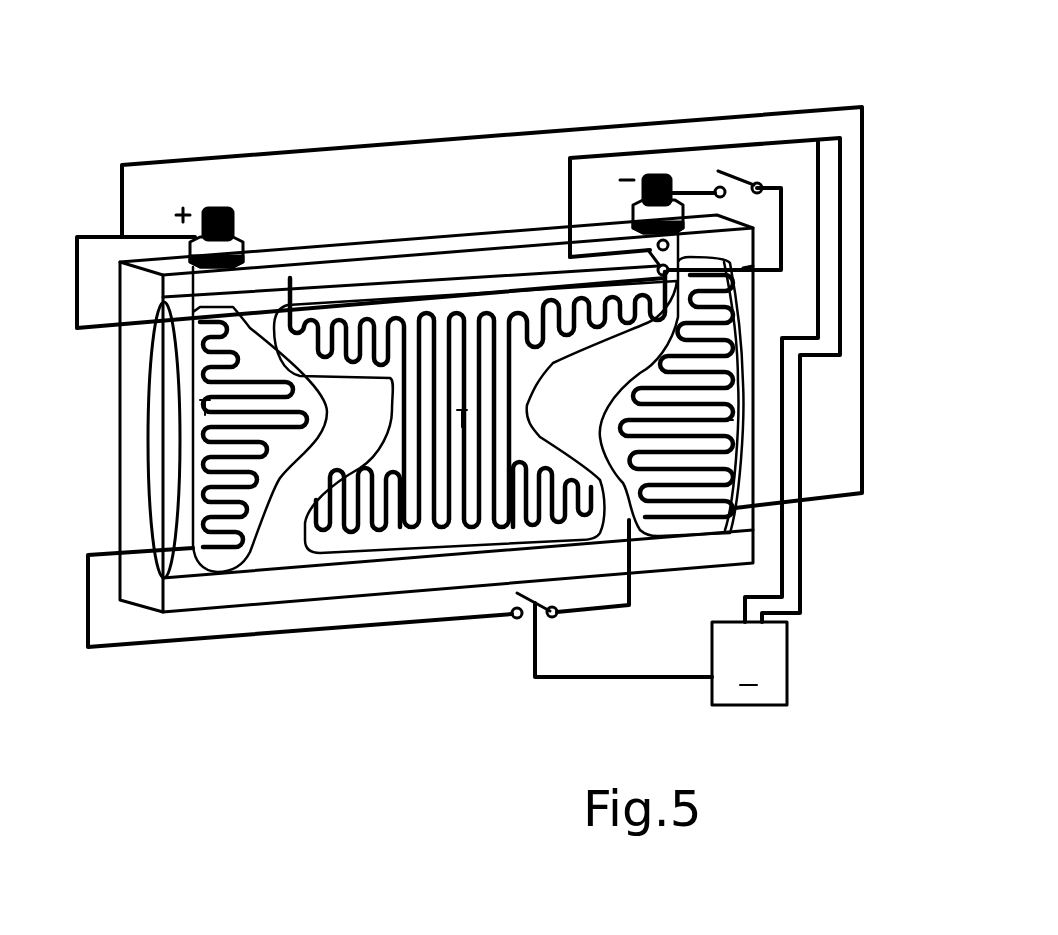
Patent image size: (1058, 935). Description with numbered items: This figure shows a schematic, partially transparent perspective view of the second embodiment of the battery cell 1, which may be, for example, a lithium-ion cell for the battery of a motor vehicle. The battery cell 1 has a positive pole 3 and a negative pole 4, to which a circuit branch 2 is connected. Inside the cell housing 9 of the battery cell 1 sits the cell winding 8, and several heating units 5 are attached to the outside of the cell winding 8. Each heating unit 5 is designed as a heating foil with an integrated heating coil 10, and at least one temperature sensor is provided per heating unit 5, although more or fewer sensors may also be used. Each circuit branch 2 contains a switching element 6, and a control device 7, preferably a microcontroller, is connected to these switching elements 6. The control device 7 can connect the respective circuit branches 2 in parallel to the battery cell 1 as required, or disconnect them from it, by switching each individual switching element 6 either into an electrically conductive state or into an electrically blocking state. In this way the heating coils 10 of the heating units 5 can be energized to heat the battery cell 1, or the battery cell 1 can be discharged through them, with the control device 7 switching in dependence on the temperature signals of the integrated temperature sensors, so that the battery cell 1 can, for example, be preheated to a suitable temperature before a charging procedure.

The battery cell 1 is at (786, 82).
The circuit branch 2 is at (845, 228).
The positive pole 3 is at (247, 221).
The negative pole 4 is at (644, 166).
The heating unit 5 is at (220, 562).
The switching element 6 is at (711, 170).
The control device 7 is at (749, 663).
The cell winding 8 is at (168, 405).
The cell housing 9 is at (130, 302).
The heating coil 10 is at (232, 428).